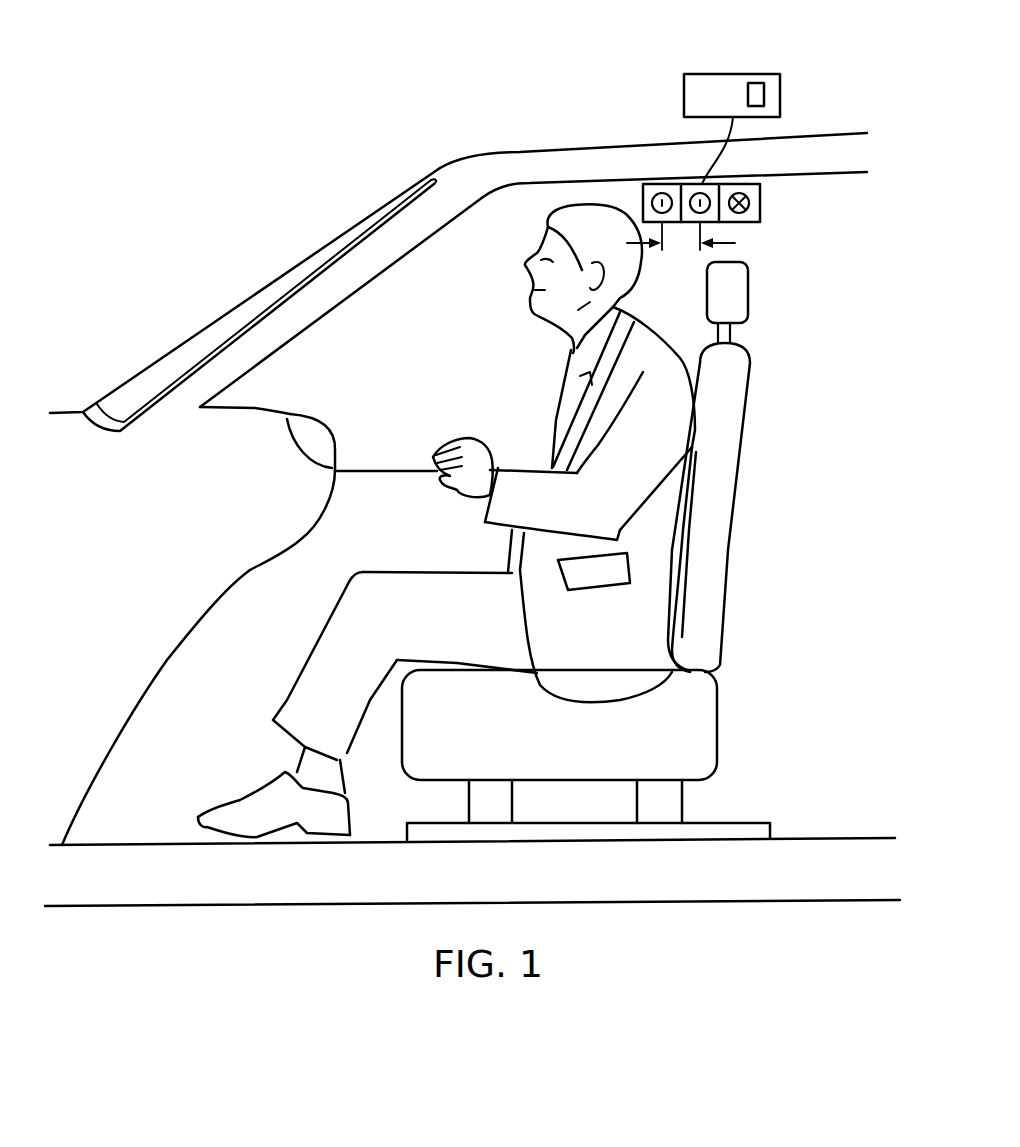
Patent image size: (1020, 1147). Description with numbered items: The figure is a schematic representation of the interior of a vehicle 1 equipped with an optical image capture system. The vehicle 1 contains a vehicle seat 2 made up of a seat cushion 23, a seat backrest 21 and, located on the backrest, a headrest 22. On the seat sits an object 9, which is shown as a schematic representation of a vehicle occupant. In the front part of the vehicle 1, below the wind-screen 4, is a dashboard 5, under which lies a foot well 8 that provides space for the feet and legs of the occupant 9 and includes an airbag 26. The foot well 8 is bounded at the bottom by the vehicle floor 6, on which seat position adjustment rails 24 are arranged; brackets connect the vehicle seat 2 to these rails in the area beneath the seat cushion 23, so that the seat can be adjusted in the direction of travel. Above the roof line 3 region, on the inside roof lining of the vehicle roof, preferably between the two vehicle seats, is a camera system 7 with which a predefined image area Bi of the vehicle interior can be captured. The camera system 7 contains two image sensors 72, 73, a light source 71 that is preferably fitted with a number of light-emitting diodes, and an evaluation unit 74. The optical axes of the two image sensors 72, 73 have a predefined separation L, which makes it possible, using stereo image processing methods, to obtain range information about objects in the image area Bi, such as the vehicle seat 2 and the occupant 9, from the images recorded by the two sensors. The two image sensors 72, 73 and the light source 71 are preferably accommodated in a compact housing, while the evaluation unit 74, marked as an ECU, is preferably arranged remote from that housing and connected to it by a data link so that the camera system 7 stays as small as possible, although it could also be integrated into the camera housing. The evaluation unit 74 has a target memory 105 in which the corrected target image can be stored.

The vehicle 1 is at (292, 176).
The vehicle seat 2 is at (818, 267).
The roof 3 is at (828, 143).
The wind-screen 4 is at (207, 337).
The dashboard 5 is at (262, 423).
The vehicle floor 6 is at (852, 837).
The camera system 7 is at (812, 233).
The foot well 8 is at (147, 808).
The object 9 is at (558, 408).
The seat backrest 21 is at (740, 385).
The headrest 22 is at (740, 292).
The seat cushion 23 is at (705, 700).
The seat position adjustment rails 24 is at (752, 822).
The airbag 26 is at (322, 428).
The light source 71 is at (762, 203).
The image sensor 72 is at (658, 184).
The image sensor 73 is at (697, 184).
The evaluation unit 74 is at (728, 74).
The target memory 105 is at (759, 83).
The image area Bi is at (500, 293).
The separation L is at (681, 245).